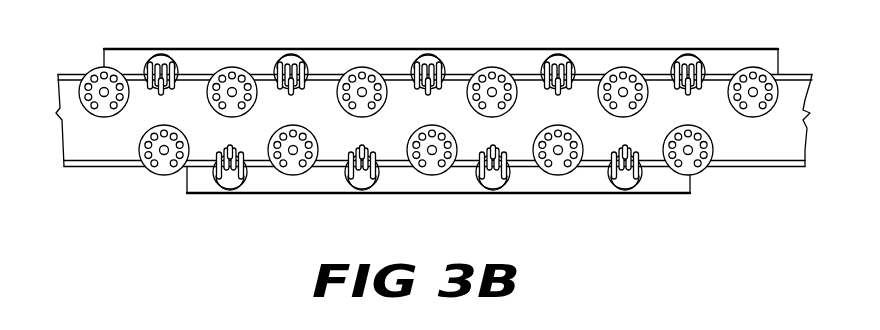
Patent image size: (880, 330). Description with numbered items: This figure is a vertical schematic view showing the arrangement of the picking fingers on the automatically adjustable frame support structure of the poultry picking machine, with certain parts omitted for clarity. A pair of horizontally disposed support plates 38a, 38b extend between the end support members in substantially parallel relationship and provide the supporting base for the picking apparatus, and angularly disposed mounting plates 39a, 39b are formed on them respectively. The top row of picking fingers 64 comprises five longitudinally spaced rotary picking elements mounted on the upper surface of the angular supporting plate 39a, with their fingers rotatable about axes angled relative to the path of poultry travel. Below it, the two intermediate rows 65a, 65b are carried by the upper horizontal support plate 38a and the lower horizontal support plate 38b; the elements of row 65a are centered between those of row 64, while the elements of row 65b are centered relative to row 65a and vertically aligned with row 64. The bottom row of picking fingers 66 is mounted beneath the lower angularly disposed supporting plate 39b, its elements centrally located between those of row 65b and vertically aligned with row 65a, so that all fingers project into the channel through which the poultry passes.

The upper horizontal support plate 38a is at (72, 74).
The lower horizontal support plate 38b is at (117, 168).
The upper angular supporting plate 39a is at (330, 50).
The lower angularly disposed supporting plate 39b is at (570, 192).
The top row of operable picking fingers 64 is at (162, 55).
The upper intermediate row of operable picking fingers 65a is at (123, 109).
The lower intermediate row of operable picking fingers 65b is at (192, 117).
The bottom row of operable picking fingers 66 is at (348, 181).